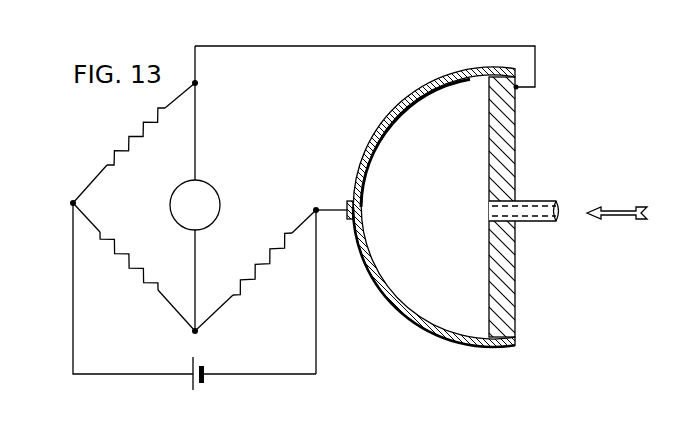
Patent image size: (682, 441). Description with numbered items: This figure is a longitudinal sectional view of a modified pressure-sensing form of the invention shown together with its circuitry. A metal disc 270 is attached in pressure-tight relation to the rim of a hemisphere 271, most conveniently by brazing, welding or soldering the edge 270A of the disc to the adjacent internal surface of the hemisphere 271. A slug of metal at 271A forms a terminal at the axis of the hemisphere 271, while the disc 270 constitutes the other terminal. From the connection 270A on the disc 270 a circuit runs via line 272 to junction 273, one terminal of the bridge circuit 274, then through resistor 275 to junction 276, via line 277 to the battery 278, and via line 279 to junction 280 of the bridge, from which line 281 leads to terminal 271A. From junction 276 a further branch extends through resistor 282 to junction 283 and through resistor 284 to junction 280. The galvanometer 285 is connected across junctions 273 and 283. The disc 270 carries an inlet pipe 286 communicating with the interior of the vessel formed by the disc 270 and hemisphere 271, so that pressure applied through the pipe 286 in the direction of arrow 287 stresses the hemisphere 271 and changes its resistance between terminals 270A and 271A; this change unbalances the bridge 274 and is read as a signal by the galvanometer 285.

The disc 270 is at (510, 155).
The edge of the disc 270A is at (518, 88).
The hemisphere 271 is at (366, 173).
The terminal 271A is at (347, 203).
The line 272 is at (404, 45).
The junction 273 is at (197, 83).
The bridge circuit 274 is at (212, 181).
The resistor 275 is at (129, 142).
The junction 276 is at (73, 203).
The line 277 is at (72, 335).
The battery 278 is at (205, 380).
The line 279 is at (317, 360).
The junction 280 is at (318, 216).
The line 281 is at (316, 207).
The resistor 282 is at (124, 262).
The junction 283 is at (197, 331).
The resistor 284 is at (257, 264).
The galvanometer 285 is at (218, 212).
The inlet pipe 286 is at (540, 201).
The arrow 287 is at (609, 220).